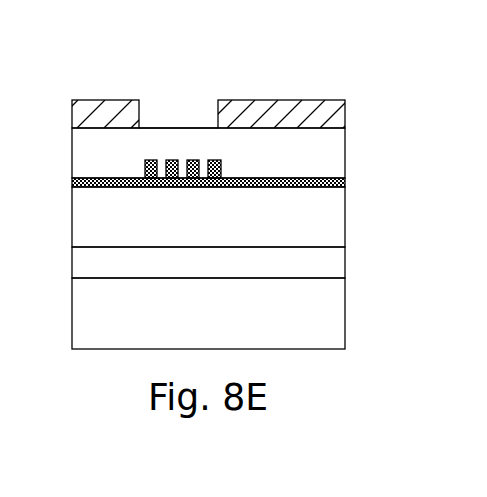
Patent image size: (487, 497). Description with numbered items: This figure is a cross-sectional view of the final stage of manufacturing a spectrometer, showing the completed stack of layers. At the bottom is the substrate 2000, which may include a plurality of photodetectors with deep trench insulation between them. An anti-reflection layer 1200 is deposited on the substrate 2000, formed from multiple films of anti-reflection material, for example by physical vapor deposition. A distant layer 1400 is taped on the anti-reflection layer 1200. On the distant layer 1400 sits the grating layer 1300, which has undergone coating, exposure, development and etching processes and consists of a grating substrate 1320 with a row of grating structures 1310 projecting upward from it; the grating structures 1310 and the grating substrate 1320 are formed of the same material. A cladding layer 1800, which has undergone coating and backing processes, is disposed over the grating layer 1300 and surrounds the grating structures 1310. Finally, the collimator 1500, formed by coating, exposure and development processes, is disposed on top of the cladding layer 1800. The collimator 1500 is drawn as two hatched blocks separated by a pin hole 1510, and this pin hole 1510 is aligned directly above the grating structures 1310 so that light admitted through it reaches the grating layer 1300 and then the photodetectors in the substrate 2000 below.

The pin hole 1510 is at (179, 106).
The collimator 1500 is at (345, 113).
The cladding layer 1800 is at (345, 150).
The grating layer 1300 is at (385, 15).
The grating structures 1310 is at (240, 155).
The grating substrate 1320 is at (345, 187).
The distant layer 1400 is at (345, 222).
The anti-reflection layer 1200 is at (345, 262).
The substrate 2000 is at (345, 315).